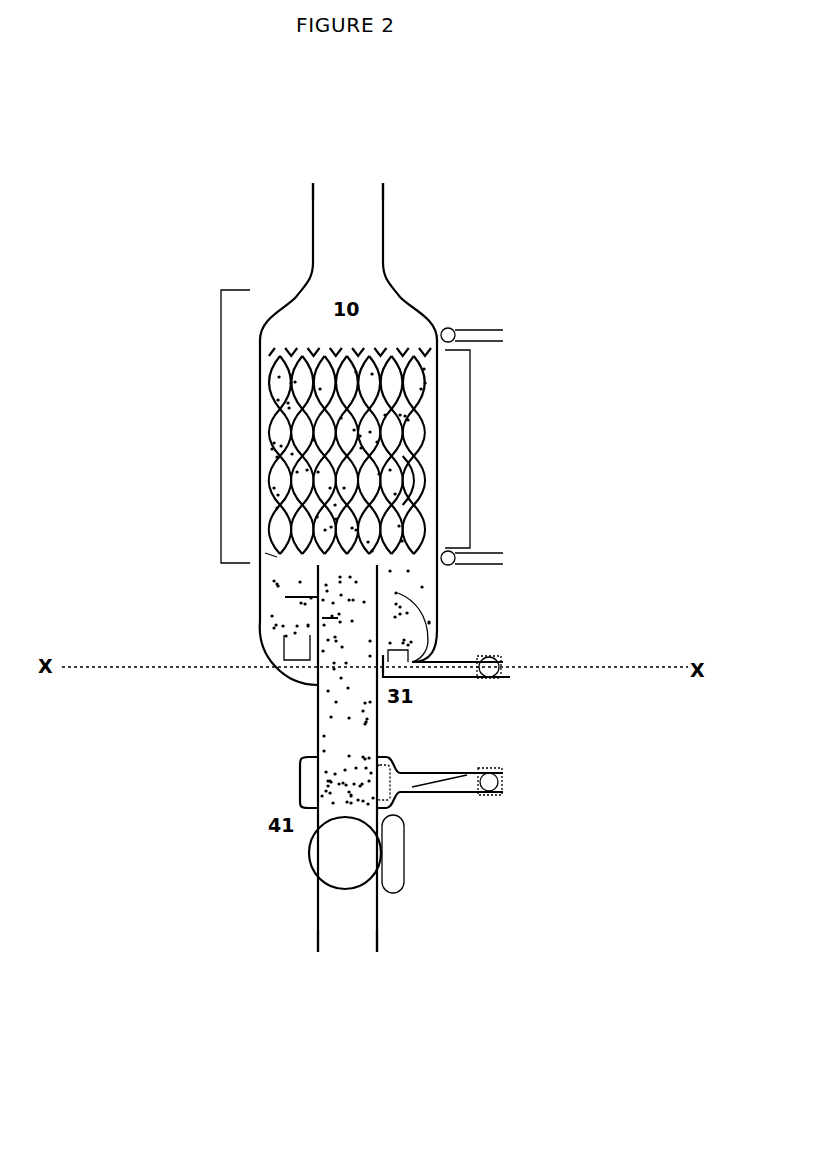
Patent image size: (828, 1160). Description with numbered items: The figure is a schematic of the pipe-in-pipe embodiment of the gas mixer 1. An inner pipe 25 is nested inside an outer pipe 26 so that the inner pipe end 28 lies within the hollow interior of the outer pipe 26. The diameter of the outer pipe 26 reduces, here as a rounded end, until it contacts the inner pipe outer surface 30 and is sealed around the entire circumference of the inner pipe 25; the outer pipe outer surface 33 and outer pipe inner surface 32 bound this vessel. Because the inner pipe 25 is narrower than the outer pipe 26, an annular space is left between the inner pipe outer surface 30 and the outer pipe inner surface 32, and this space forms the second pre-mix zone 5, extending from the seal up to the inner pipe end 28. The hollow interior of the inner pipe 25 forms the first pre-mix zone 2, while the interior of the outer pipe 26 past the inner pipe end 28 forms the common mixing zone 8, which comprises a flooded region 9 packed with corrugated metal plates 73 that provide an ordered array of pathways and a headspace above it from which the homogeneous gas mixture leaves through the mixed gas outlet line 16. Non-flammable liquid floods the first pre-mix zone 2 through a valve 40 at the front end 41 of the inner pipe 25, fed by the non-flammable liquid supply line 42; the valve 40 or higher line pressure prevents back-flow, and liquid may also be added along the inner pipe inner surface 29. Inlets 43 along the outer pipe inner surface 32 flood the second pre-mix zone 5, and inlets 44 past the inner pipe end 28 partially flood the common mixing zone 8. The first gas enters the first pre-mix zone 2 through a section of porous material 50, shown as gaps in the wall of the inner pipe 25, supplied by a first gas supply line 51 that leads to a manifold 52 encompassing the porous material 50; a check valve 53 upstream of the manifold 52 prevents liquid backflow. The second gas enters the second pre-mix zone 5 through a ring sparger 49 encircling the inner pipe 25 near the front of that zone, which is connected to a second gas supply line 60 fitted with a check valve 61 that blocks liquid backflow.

The gas mixer 1 is at (578, 451).
The first pre-mix zone 2 is at (308, 623).
The second pre-mix zone 5 is at (420, 630).
The common mixing zone 8 is at (221, 430).
The flooded region 9 is at (470, 445).
The mixed gas outlet line 16 is at (383, 240).
The inner pipe 25 is at (318, 727).
The outer pipe 26 is at (440, 403).
The inner pipe end 28 is at (455, 632).
The inner pipe inner surface 29 is at (358, 668).
The inner pipe outer surface 30 is at (380, 720).
The outer pipe inner surface 32 is at (268, 566).
The outer pipe outer surface 33 is at (266, 553).
The valve 40 is at (345, 855).
The front end 41 is at (393, 854).
The non-flammable liquid supply line 42 is at (378, 938).
The inlets 43 is at (467, 566).
The inlets 44 is at (470, 330).
The ring sparger 49 is at (467, 660).
The porous material 50 is at (447, 773).
The first gas supply line 51 is at (458, 791).
The manifold 52 is at (397, 767).
The check valve 53 is at (490, 775).
The second gas supply line 60 is at (487, 676).
The check valve 61 is at (493, 658).
The corrugated metal plates 73 is at (425, 465).